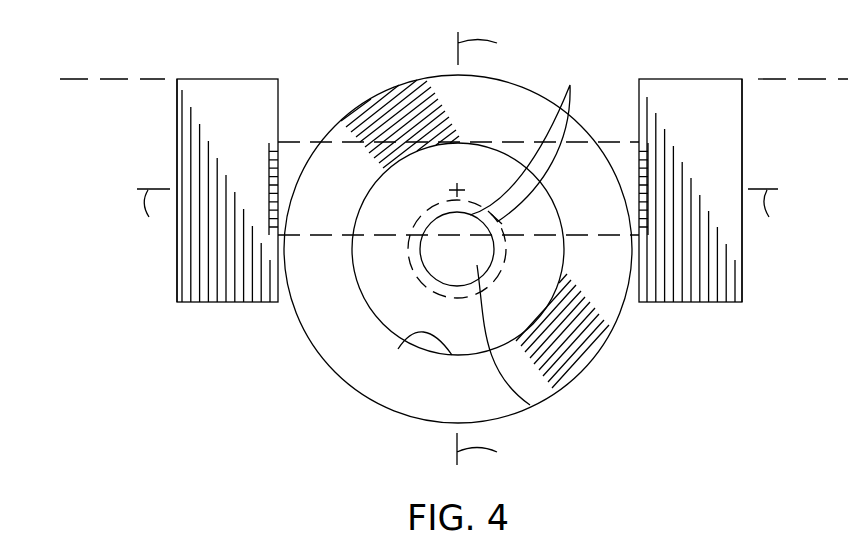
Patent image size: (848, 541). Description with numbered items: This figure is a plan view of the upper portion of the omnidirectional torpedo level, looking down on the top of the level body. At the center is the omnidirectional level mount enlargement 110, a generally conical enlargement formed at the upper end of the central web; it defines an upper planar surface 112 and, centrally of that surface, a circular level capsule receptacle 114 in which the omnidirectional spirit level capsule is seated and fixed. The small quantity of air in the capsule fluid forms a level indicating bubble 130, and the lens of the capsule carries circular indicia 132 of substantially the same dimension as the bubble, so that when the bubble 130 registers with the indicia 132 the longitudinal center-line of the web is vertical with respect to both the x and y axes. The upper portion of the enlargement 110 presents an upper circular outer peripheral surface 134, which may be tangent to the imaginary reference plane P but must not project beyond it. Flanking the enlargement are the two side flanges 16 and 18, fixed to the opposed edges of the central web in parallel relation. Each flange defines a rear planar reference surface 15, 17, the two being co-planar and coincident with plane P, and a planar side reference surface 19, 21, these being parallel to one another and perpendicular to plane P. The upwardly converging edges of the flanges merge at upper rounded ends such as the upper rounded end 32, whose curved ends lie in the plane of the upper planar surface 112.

The rear planar reference surface 15 is at (238, 78).
The side flange 16 is at (218, 121).
The rear planar reference surface 17 is at (688, 78).
The side flange 18 is at (715, 115).
The planar side reference surface 19 is at (177, 149).
The planar side reference surface 21 is at (742, 148).
The upper rounded end 32 is at (177, 272).
The omnidirectional level mount enlargement 110 is at (606, 375).
The upper planar surface 112 is at (343, 342).
The circular level capsule receptacle 114 is at (411, 339).
The level indicating bubble 130 is at (530, 405).
The circular indicia 132 is at (570, 86).
The upper circular outer peripheral surface 134 is at (340, 124).